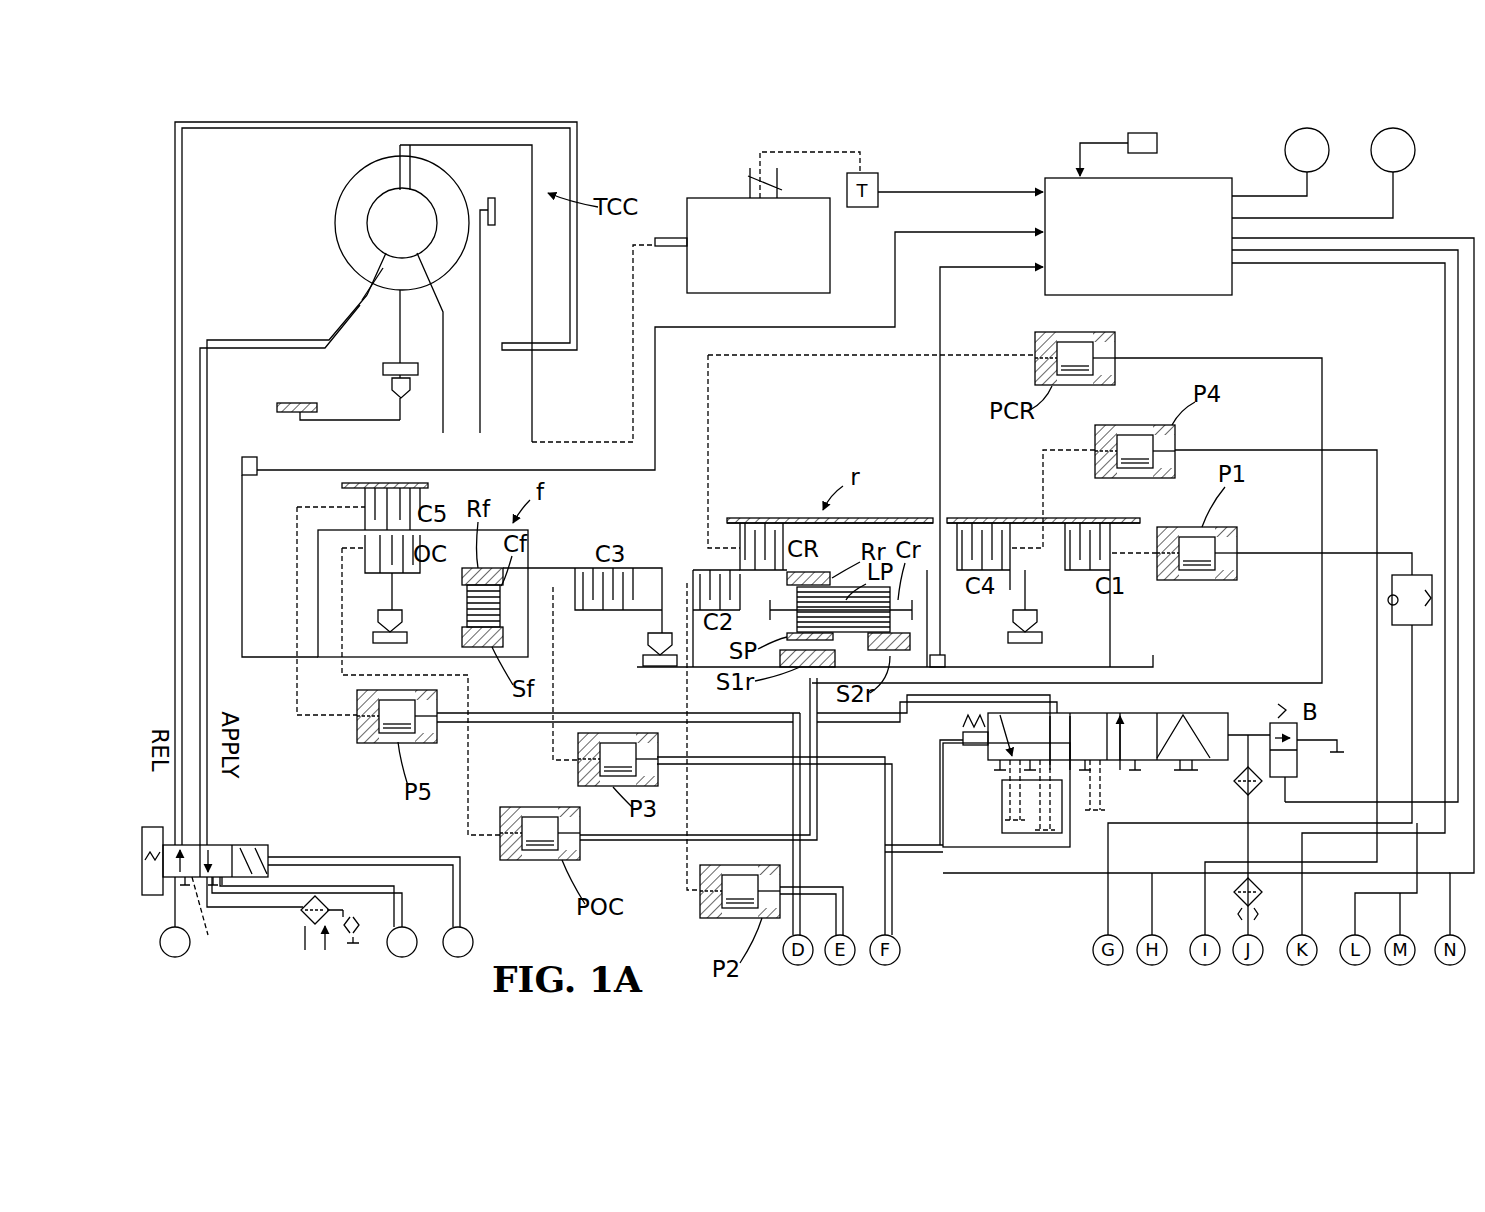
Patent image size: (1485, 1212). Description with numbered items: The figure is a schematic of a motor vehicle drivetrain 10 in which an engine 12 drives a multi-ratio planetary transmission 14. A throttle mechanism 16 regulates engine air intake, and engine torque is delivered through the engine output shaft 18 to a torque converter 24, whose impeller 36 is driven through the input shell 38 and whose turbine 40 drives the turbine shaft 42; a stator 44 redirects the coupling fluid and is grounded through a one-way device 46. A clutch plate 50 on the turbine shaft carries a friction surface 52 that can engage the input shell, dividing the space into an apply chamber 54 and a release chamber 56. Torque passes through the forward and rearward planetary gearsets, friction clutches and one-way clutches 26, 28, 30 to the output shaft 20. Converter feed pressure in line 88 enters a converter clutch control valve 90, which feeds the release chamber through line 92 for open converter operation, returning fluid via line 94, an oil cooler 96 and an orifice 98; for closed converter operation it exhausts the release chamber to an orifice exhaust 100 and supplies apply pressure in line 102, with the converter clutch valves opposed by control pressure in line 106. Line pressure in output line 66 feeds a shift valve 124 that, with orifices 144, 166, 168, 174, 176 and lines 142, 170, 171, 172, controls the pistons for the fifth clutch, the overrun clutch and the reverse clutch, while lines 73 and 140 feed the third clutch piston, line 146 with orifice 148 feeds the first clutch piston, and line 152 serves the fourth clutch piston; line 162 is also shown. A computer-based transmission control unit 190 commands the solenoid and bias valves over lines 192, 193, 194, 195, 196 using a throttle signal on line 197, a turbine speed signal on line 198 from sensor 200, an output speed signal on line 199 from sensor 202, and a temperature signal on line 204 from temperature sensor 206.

The motor vehicle drivetrain 10 is at (908, 172).
The engine 12 is at (687, 224).
The planetary transmission 14 is at (723, 493).
The throttle mechanism 16 is at (748, 176).
The engine output shaft 18 is at (670, 248).
The output shaft 20 is at (1153, 667).
The torque converter 24 is at (296, 210).
The one-way clutch 26 is at (378, 646).
The one-way clutch 28 is at (651, 666).
The one-way clutch 30 is at (1010, 641).
The impeller 36 is at (348, 240).
The input shell 38 is at (548, 172).
The turbine 40 is at (442, 195).
The turbine shaft 42 is at (258, 425).
The stator member 44 is at (352, 296).
The one-way device 46 is at (392, 389).
The clutch plate 50 is at (480, 262).
The friction surface 52 is at (500, 210).
The apply chamber 54 is at (446, 342).
The release chamber 56 is at (520, 300).
The output line 66 is at (1303, 920).
The line 73 is at (893, 910).
The line 88 is at (163, 934).
The TCC Control Valve 90 is at (228, 845).
The line 92 is at (176, 648).
The line 94 is at (209, 662).
The oil cooler 96 is at (304, 918).
The orifice 98 is at (360, 940).
The orifice exhaust 100 is at (217, 925).
The line 102 is at (352, 893).
The line 106 is at (463, 900).
The Shift Valve 124 is at (1223, 713).
The line 140 is at (876, 764).
The line 142 is at (1000, 860).
The orifice 144 is at (1085, 768).
The line 146 is at (1108, 918).
The orifice 148 is at (1420, 582).
The line 152 is at (1205, 912).
The hydraulic line 162 is at (822, 888).
The orifice 166 is at (1045, 776).
The orifice 168 is at (1005, 775).
The line 170 is at (890, 725).
The line 171 is at (810, 705).
The line 172 is at (793, 778).
The orifice 174 is at (1010, 808).
The orifice 176 is at (1092, 790).
The Transmission Control Unit 190 is at (1175, 296).
The line 192 is at (1380, 238).
The line 193 is at (1372, 250).
The line 194 is at (1345, 263).
The line 195 is at (1325, 218).
The line 196 is at (1262, 196).
The line 197 is at (965, 193).
The line 198 is at (893, 258).
The line 199 is at (958, 270).
The sensor 200 is at (257, 478).
The sensor 202 is at (948, 660).
The line 204 is at (1084, 140).
The temperature sensor 206 is at (1157, 143).